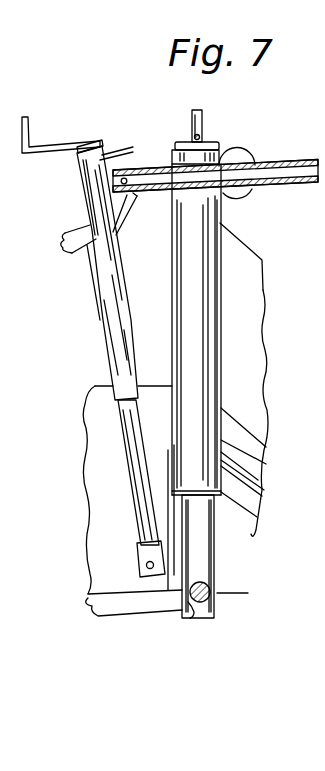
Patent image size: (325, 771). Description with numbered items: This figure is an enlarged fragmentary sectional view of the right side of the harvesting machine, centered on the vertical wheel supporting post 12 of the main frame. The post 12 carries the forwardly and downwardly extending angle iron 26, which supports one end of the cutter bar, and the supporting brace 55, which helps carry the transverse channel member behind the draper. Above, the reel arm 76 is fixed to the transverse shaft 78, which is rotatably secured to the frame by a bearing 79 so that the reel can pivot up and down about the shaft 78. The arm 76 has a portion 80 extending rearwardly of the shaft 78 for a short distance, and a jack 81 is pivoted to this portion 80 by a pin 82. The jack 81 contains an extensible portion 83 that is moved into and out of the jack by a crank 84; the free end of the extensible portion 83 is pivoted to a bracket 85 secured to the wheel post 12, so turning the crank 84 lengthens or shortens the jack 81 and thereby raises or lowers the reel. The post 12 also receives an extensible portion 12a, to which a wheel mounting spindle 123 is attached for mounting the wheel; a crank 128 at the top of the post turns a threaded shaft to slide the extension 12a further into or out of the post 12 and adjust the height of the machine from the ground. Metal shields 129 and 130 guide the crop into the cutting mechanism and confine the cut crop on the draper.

The wheel supporting post 12 is at (214, 310).
The extensible portion 12a is at (218, 600).
The angle iron 26 is at (250, 494).
The supporting brace 55 is at (70, 232).
The reel arm 76 is at (283, 158).
The transverse shaft 78 is at (246, 160).
The bearing 79 is at (245, 197).
The portion 80 is at (148, 170).
The jack 81 is at (106, 327).
The pin 82 is at (129, 166).
The extensible portion 83 is at (133, 476).
The crank 84 is at (28, 129).
The bracket 85 is at (175, 541).
The wheel mounting spindle 123 is at (192, 608).
The crank 128 is at (203, 119).
The metal shield 129 is at (268, 375).
The metal shield 130 is at (88, 426).